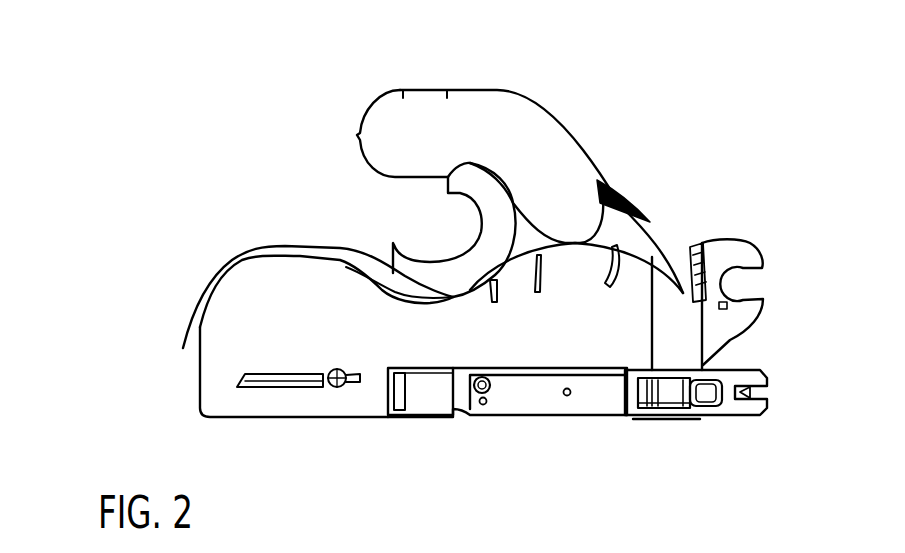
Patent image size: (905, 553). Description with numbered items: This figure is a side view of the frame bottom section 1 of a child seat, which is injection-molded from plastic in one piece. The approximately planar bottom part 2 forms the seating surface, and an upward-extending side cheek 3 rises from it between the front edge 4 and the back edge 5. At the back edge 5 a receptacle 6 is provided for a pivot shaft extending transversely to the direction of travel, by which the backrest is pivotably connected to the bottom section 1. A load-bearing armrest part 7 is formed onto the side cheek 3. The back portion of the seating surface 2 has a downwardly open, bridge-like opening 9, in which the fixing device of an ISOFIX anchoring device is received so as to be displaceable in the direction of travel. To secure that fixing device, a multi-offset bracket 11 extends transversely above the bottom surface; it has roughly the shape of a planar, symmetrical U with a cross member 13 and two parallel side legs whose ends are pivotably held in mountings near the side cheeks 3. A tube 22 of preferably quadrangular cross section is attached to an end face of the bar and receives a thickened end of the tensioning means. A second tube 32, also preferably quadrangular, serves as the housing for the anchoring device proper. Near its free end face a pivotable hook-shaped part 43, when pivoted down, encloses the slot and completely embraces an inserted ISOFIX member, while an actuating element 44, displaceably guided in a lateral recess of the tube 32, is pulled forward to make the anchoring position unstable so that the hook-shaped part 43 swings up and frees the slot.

The frame bottom section 1 is at (213, 95).
The bottom part 2 is at (377, 418).
The side cheek 3 is at (281, 290).
The front edge 4 is at (200, 380).
The back edge 5 is at (687, 350).
The receptacle 6 is at (748, 257).
The armrest part 7 is at (447, 88).
The bridge-like opening 9 is at (462, 405).
The bracket 11 is at (330, 390).
The cross member 13 is at (292, 388).
The tube 22 is at (538, 400).
The second tube 32 is at (735, 405).
The hook-shaped part 43 is at (764, 398).
The actuating element 44 is at (675, 395).